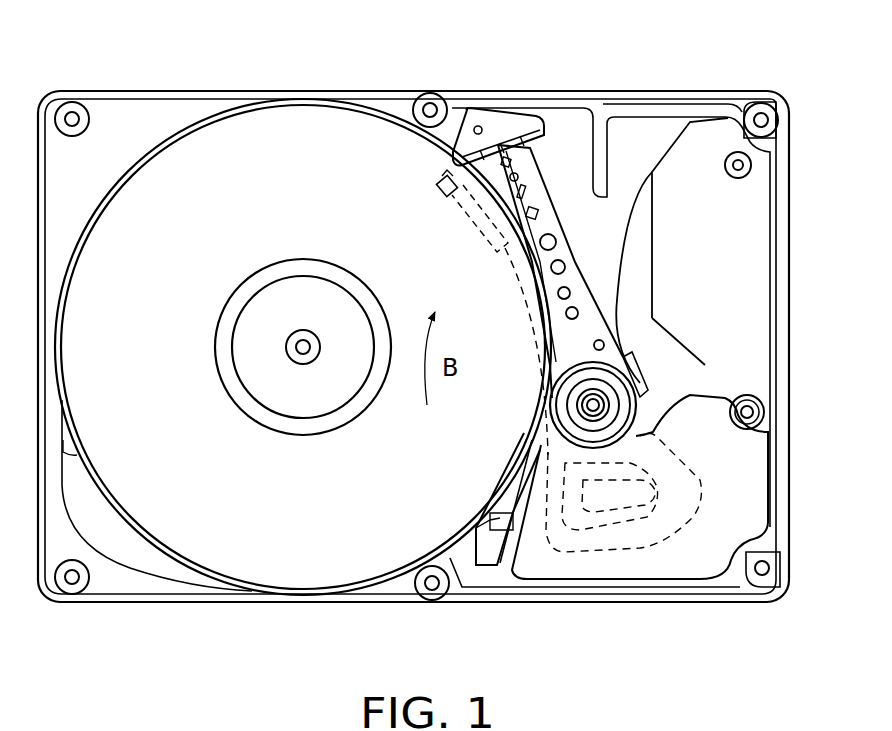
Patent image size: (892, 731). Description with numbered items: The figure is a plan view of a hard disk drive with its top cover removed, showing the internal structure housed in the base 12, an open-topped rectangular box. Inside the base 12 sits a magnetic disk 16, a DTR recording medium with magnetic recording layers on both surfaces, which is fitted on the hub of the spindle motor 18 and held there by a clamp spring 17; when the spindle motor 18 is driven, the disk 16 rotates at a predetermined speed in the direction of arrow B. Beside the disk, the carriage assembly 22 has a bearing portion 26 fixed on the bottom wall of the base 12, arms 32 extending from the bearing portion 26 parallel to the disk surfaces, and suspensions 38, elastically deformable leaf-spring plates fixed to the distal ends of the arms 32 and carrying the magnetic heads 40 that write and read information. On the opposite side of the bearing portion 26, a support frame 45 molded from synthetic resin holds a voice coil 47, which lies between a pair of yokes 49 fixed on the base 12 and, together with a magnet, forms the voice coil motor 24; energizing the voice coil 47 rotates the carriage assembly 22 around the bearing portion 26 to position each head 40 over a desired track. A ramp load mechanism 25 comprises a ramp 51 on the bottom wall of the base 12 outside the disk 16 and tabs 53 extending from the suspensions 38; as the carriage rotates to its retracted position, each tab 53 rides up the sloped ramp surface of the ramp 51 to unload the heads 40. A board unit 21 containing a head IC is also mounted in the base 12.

The base 12 is at (124, 107).
The magnetic disk 16 is at (291, 120).
The clamp spring 17 is at (299, 403).
The spindle motor 18 is at (207, 358).
The board unit 21 is at (695, 147).
The carriage assembly 22 is at (525, 298).
The voice coil motor 24 is at (538, 492).
The ramp load mechanism 25 is at (487, 90).
The bearing portion 26 is at (563, 412).
The arms 32 is at (593, 330).
The suspensions 38 is at (525, 182).
The magnetic heads 40 is at (440, 195).
The support frame 45 is at (693, 480).
The voice coil 47 is at (607, 517).
The yokes 49 is at (760, 470).
The ramp 51 is at (525, 118).
The tabs 53 is at (440, 180).